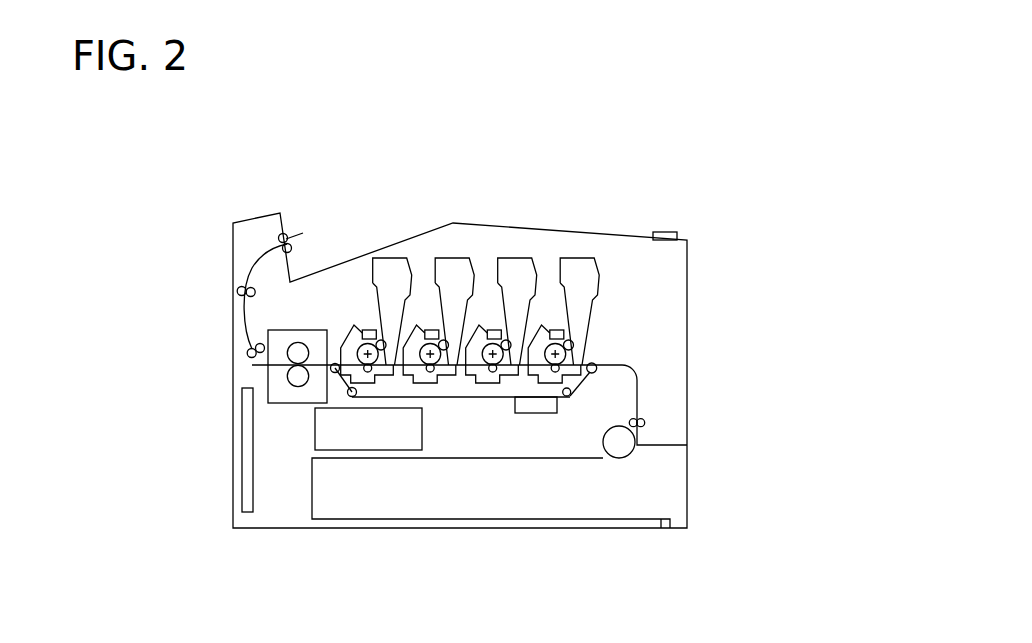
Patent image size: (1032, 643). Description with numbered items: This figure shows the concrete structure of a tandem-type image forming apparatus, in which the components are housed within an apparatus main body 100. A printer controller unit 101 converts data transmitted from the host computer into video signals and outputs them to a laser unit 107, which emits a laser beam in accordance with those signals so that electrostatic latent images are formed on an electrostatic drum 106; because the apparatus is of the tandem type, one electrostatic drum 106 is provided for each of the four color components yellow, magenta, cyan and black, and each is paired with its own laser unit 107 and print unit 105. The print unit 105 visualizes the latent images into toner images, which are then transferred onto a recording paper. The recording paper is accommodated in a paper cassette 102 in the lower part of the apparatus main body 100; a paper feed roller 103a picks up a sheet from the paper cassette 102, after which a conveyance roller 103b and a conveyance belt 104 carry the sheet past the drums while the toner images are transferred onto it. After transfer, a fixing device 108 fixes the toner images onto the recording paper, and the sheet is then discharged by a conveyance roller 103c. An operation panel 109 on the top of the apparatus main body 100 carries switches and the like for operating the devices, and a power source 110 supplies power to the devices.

The apparatus main body 100 is at (688, 260).
The printer controller unit 101 is at (250, 439).
The paper cassette 102 is at (677, 463).
The paper feed roller 103a is at (622, 448).
The conveyance roller 103b is at (645, 423).
The conveyance roller 103c is at (249, 352).
The conveyance belt 104 is at (590, 383).
The print unit 105 is at (390, 275).
The electrostatic drum 106 is at (553, 362).
The laser unit 107 is at (700, 288).
The fixing device 108 is at (273, 372).
The operation panel 109 is at (668, 232).
The power source 110 is at (327, 428).